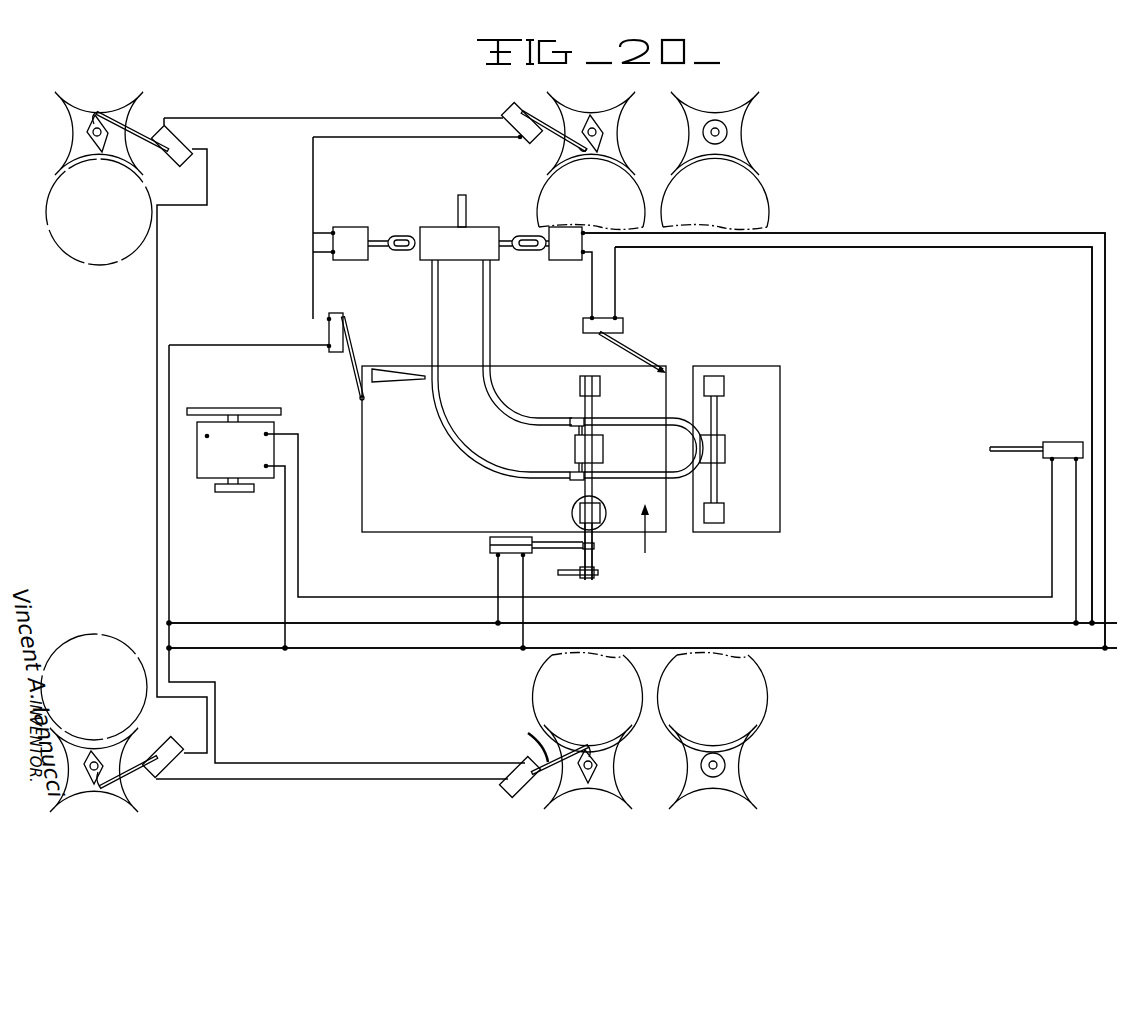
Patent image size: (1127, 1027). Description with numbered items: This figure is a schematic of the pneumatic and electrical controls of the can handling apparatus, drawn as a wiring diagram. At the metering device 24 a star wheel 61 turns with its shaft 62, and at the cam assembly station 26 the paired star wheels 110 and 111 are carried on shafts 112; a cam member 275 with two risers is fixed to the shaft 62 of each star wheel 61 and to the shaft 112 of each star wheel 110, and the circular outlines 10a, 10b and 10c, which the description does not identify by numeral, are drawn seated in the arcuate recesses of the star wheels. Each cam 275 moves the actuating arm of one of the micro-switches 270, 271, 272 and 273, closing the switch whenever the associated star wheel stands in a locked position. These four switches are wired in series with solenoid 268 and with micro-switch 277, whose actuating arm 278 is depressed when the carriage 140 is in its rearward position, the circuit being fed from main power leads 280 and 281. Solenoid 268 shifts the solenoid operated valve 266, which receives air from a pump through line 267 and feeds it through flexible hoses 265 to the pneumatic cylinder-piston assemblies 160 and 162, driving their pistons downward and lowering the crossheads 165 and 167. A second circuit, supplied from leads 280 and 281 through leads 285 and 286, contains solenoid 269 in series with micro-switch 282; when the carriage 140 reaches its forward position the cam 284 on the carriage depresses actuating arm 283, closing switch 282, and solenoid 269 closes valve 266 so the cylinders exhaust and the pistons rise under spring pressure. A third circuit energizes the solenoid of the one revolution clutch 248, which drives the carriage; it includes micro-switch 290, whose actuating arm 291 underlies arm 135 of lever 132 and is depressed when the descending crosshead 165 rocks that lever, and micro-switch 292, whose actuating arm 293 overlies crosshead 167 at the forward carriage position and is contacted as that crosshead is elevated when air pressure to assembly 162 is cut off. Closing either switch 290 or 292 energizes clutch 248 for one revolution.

The wheel unit 10a is at (772, 204).
The wheel unit 10b is at (536, 204).
The wheel unit 10c is at (45, 208).
The metering device 24 is at (332, 445).
The cam assembly station 26 is at (411, 459).
The star wheel 61 is at (115, 110).
The shaft 62 is at (94, 122).
The star wheel 110 is at (620, 163).
The star wheel 111 is at (735, 144).
The shaft 112 is at (598, 132).
The cam member 275 is at (93, 141).
The micro-switch 270 is at (519, 128).
The micro-switch 271 is at (172, 140).
The micro-switch 272 is at (172, 748).
The micro-switch 273 is at (509, 790).
The solenoid 268 is at (346, 236).
The solenoid operated valve 266 is at (440, 238).
The line 267 is at (460, 200).
The solenoid 269 is at (566, 261).
The flexible hoses 265 is at (514, 414).
The lead 285 is at (886, 230).
The lead 286 is at (897, 249).
The main power lead 280 is at (412, 623).
The main power lead 281 is at (406, 650).
The micro-switch 277 is at (345, 320).
The actuating arm 278 is at (355, 369).
The micro-switch 282 is at (624, 327).
The actuating arm 283 is at (636, 357).
The cam 284 is at (395, 379).
The pneumatic cylinder-piston assembly 160 is at (611, 444).
The pneumatic cylinder-piston assembly 162 is at (739, 439).
The crosshead 165 is at (585, 491).
The crosshead 167 is at (720, 491).
The carriage 140 is at (647, 539).
The one revolution solenoid operated clutch 248 is at (207, 436).
The micro-switch 290 is at (492, 556).
The actuating arm 291 is at (548, 553).
The arm 135 is at (588, 547).
The lever 132 is at (587, 576).
The micro-switch 292 is at (1063, 442).
The actuating arm 293 is at (1018, 456).